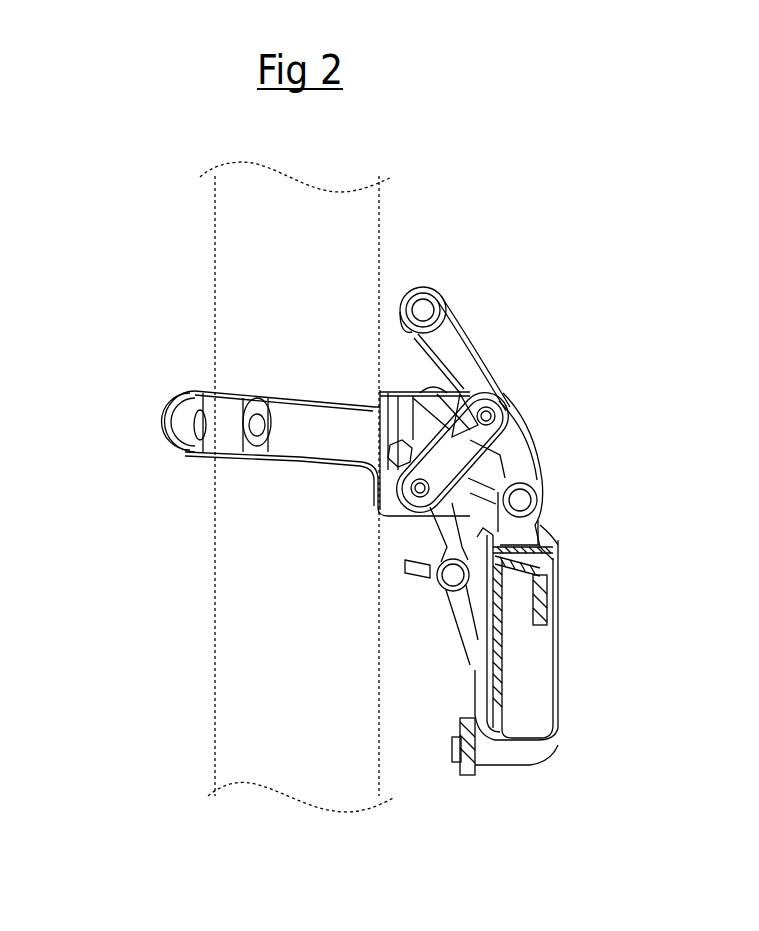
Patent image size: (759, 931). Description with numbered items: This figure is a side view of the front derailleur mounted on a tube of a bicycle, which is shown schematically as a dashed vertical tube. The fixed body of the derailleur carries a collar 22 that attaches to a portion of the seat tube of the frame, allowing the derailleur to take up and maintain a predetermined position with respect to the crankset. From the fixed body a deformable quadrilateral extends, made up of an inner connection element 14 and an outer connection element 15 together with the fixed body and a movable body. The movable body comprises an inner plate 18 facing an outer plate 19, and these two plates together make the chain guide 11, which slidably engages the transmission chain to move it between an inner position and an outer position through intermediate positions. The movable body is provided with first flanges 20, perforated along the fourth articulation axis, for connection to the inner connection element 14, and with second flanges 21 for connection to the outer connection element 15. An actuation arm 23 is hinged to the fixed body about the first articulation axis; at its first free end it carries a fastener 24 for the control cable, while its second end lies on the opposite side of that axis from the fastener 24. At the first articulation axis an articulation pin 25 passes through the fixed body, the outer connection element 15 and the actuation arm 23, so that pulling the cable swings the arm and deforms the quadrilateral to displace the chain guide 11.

The chain guide 11 is at (557, 633).
The inner connection element 14 is at (438, 537).
The outer connection element 15 is at (540, 453).
The inner plate 18 is at (490, 672).
The outer plate 19 is at (555, 752).
The first flanges 20 is at (460, 598).
The second flanges 21 is at (543, 520).
The collar 22 is at (313, 433).
The actuation arm 23 is at (463, 342).
The fastener 24 is at (424, 304).
The articulation pin 25 is at (505, 393).